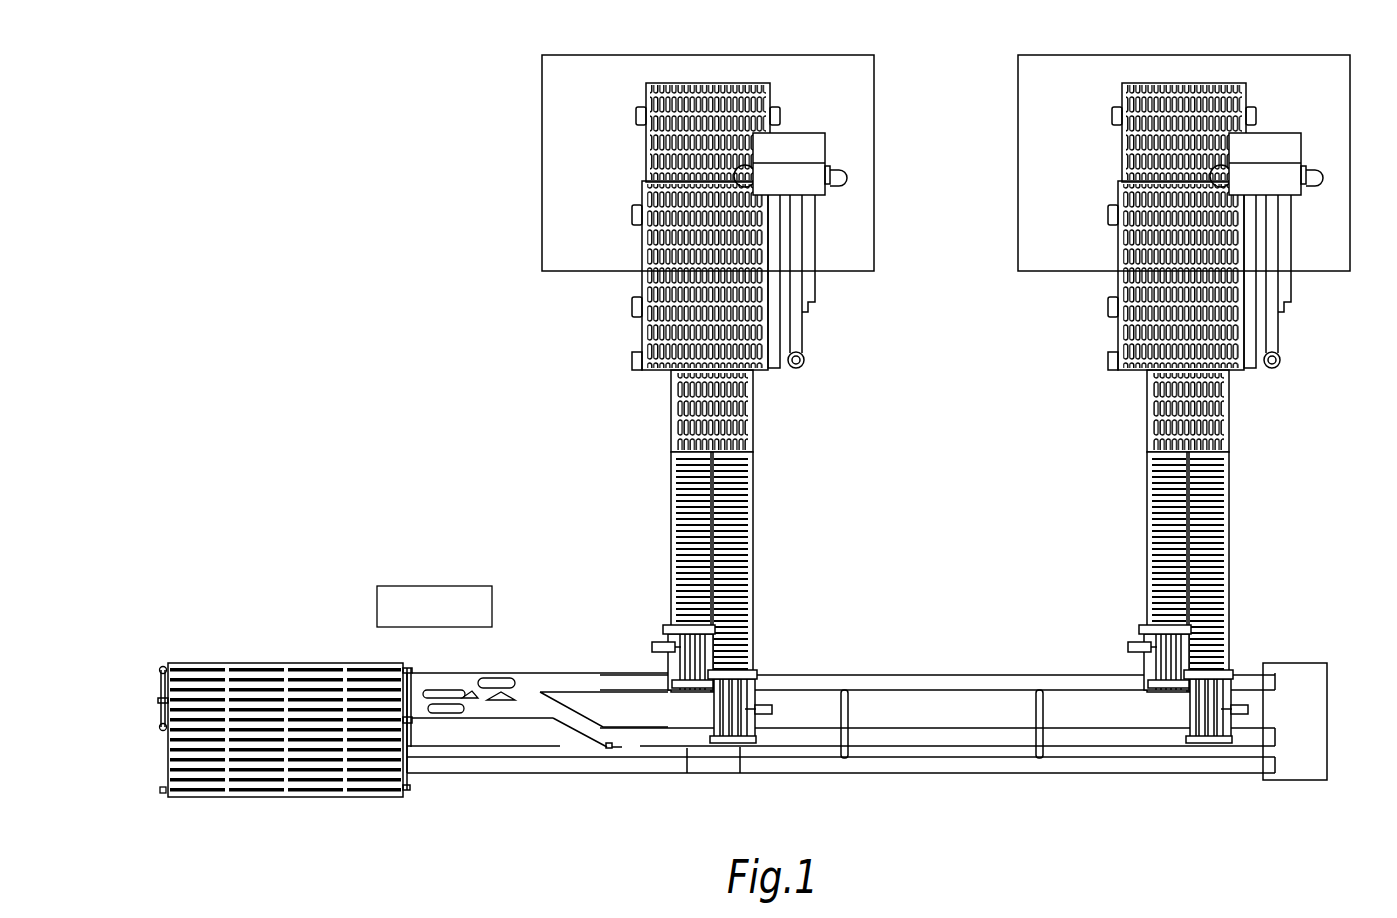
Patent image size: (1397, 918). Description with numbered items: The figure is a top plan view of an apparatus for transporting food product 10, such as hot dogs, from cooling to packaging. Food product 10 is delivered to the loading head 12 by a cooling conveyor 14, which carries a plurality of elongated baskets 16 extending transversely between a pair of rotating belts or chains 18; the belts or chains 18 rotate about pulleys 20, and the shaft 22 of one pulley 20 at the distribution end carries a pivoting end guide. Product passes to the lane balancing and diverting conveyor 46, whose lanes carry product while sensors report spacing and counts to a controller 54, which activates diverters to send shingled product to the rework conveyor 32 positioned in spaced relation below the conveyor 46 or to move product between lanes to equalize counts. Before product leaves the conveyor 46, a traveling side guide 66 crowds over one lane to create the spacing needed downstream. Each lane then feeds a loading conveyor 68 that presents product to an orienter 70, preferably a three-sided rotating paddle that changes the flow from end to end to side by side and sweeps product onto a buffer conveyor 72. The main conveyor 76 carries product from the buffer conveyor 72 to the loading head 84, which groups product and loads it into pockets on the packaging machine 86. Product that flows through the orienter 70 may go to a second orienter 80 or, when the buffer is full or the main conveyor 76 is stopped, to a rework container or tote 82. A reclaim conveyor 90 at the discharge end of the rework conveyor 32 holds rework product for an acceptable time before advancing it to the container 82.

The food product 10 is at (495, 680).
The loading head 12 is at (597, 112).
The cooling conveyor 14 is at (150, 752).
The elongated baskets 16 is at (265, 797).
The belts or chains 18 is at (158, 700).
The pulleys 20 is at (163, 667).
The shaft 22 is at (165, 665).
The rework conveyor 32 is at (705, 775).
The lane balancing and diverting conveyor 46 is at (535, 625).
The controller 54 is at (413, 586).
The traveling side guide 66 is at (575, 740).
The loading conveyor 68 is at (630, 672).
The orienter 70 is at (675, 688).
The buffer conveyor 72 is at (677, 645).
The main conveyor 76 is at (753, 537).
The second orienter 80 is at (1153, 680).
The rework container or tote 82 is at (1327, 695).
The loading head 84 is at (770, 95).
The packaging machine 86 is at (542, 158).
The reclaim conveyor 90 is at (940, 773).